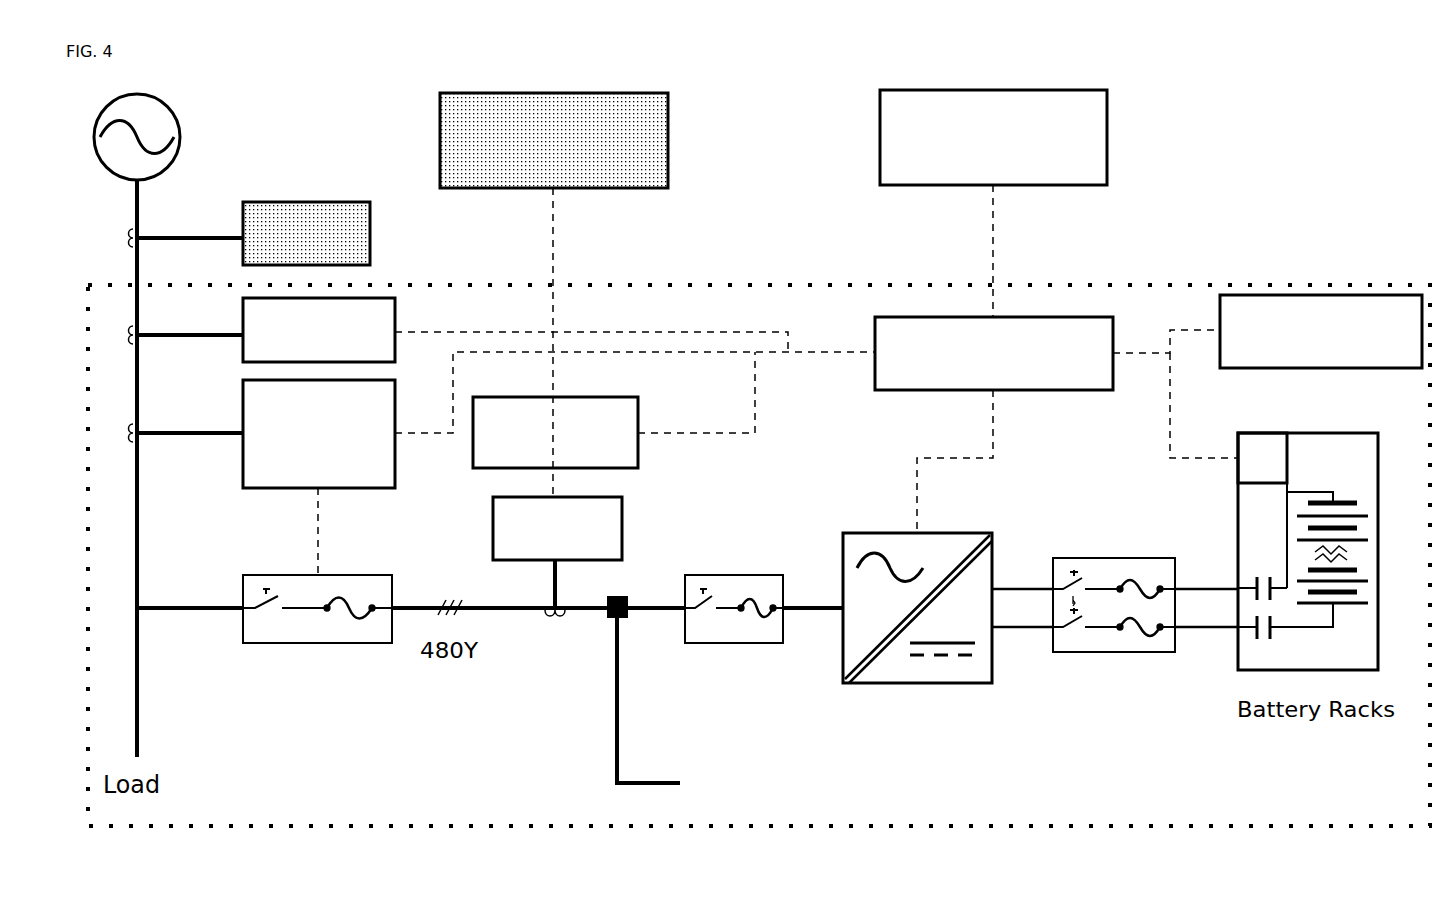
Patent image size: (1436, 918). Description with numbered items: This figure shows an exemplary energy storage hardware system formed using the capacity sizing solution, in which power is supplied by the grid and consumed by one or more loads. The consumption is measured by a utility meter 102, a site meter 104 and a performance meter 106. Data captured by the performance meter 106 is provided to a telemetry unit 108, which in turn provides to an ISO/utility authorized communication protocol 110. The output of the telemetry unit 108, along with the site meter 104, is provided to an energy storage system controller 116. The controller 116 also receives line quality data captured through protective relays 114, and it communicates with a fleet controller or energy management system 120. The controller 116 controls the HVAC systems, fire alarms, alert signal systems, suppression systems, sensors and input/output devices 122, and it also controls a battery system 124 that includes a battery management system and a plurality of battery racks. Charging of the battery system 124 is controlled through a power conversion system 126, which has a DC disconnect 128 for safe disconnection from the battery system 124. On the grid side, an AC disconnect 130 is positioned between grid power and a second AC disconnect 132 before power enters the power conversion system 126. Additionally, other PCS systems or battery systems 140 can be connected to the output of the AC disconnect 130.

The utility meter 102 is at (267, 233).
The site meter 104 is at (462, 330).
The performance meter 106 is at (570, 556).
The telemetry unit 108 is at (614, 410).
The ISO/utility authorized communication protocol 110 is at (574, 295).
The protective relays 114 is at (506, 463).
The energy storage system (ESS) controller 116 is at (1041, 425).
The fleet controller / EMS 120 is at (1005, 203).
The HVAC systems, fire alarms, alert signal systems, suppression systems, sensors, a 122 is at (1321, 320).
The battery system 124 is at (1269, 449).
The power conversion system 126 is at (917, 613).
The DC disconnect 128 is at (1116, 628).
The AC disconnect 130 is at (300, 647).
The second AC disconnect 132 is at (735, 634).
The other PCS systems or battery systems 140 is at (839, 708).